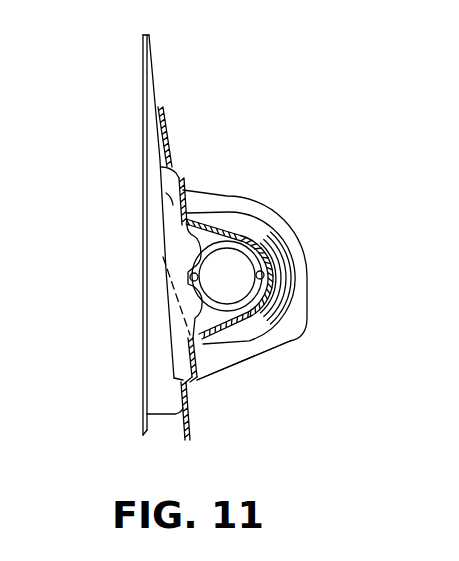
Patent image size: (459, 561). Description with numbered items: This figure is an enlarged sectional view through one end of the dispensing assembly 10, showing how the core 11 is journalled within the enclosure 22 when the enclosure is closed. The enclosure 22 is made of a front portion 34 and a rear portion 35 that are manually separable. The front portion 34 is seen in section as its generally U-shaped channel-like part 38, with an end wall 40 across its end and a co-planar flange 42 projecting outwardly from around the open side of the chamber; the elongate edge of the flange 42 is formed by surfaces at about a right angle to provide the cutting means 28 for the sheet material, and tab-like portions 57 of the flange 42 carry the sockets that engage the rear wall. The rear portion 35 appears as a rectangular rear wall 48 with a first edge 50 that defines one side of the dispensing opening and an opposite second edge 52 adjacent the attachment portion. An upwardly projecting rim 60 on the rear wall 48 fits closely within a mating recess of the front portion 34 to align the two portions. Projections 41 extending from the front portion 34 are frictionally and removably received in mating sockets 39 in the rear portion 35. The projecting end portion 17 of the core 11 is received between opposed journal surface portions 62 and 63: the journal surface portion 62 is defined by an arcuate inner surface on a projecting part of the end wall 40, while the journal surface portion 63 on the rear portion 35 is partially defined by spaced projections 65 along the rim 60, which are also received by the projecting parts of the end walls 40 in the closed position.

The dispensing assembly 10 is at (296, 121).
The core 11 is at (262, 259).
The projecting end portions 17 is at (190, 300).
The enclosure 22 is at (312, 320).
The cutting means 28 is at (190, 440).
The front portion 34 is at (225, 197).
The rear portion 35 is at (143, 96).
The channel-like part 38 is at (310, 285).
The sockets 39 is at (185, 385).
The end walls 40 is at (253, 355).
The projections 41 is at (191, 385).
The flange 42 is at (165, 160).
The rear wall 48 is at (143, 58).
The first edge 50 is at (143, 435).
The second edge 52 is at (148, 35).
The tab-like portions 57 is at (162, 115).
The rim 60 is at (173, 200).
The journal surface portions 62 is at (242, 249).
The journal surface portions 63 is at (190, 278).
The spaced projections 65 is at (185, 240).